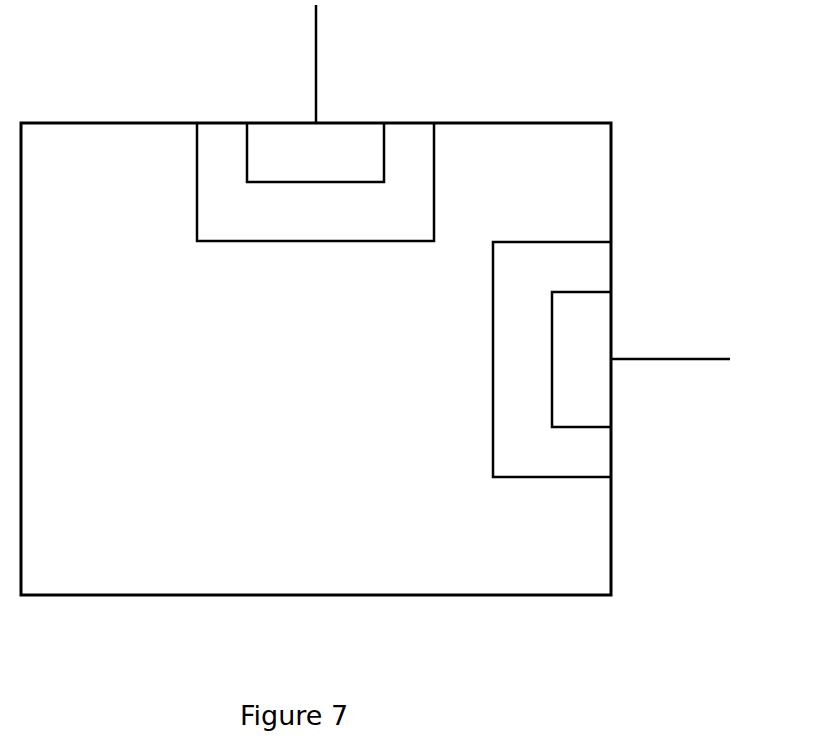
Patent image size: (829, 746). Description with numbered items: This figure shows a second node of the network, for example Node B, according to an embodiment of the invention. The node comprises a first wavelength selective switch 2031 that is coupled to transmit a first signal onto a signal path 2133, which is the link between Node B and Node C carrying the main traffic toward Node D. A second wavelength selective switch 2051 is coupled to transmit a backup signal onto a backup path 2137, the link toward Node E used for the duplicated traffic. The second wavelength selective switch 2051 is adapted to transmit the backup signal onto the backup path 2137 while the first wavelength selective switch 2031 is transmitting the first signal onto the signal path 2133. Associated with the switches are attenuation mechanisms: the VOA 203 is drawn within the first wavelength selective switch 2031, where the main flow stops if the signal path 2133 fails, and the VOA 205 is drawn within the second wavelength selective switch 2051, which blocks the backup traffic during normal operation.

The VOA 205 is at (269, 140).
The second wavelength selective switch 2051 is at (197, 213).
The backup path 2137 is at (316, 31).
The VOA 203 is at (598, 388).
The first wavelength selective switch 2031 is at (593, 458).
The signal path 2133 is at (663, 358).